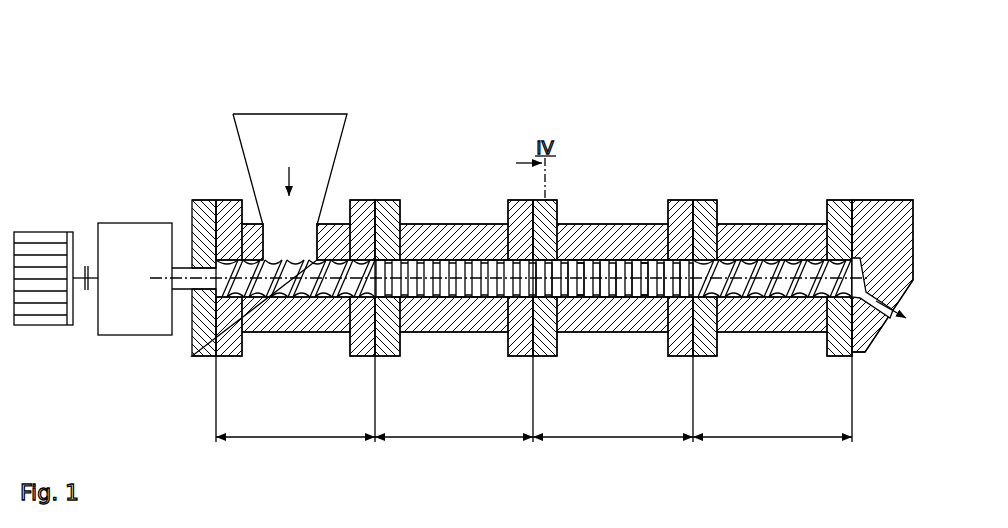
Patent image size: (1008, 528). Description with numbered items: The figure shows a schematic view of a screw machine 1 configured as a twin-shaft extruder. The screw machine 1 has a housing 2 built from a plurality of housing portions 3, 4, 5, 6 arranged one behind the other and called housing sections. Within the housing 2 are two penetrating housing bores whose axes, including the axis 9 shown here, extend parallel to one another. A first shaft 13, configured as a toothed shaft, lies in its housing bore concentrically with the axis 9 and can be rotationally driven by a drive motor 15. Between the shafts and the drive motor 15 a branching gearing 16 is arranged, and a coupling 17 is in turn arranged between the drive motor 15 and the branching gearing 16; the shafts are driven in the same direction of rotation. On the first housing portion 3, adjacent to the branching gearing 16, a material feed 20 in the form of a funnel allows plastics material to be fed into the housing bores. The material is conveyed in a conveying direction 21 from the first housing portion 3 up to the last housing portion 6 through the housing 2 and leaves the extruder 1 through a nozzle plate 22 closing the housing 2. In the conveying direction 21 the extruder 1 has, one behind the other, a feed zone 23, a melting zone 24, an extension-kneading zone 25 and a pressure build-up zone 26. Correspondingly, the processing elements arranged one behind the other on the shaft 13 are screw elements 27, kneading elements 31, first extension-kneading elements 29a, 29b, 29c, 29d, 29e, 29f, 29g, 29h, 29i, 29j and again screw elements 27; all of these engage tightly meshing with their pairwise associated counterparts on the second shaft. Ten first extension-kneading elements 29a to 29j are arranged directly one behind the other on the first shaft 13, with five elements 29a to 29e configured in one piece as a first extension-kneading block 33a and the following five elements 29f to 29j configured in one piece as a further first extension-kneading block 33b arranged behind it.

The screw machine 1 is at (611, 144).
The housing 2 is at (375, 199).
The first housing portion 3 is at (338, 222).
The housing portion 4 is at (433, 222).
The housing portion 5 is at (614, 222).
The last housing portion 6 is at (733, 222).
The axis 9 is at (270, 280).
The first shaft 13 is at (187, 272).
The drive motor 15 is at (43, 234).
The branching gearing 16 is at (118, 233).
The coupling 17 is at (83, 266).
The material feed 20 is at (250, 157).
The conveying direction 21 is at (444, 116).
The nozzle plate 22 is at (887, 322).
The feed zone 23 is at (295, 427).
The melting zone 24 is at (454, 427).
The extension-kneading zone 25 is at (613, 427).
The pressure build-up zone 26 is at (772, 427).
The screw element 27 is at (354, 300).
The first extension-kneading element 29a is at (542, 300).
The first extension-kneading element 29b is at (556, 300).
The first extension-kneading element 29c is at (573, 300).
The first extension-kneading element 29d is at (589, 300).
The first extension-kneading element 29e is at (603, 300).
The first extension-kneading element 29f is at (621, 300).
The first extension-kneading element 29g is at (637, 300).
The first extension-kneading element 29h is at (653, 300).
The first extension-kneading element 29i is at (668, 300).
The first extension-kneading element 29j is at (686, 300).
The kneading element 31 is at (433, 300).
The first extension-kneading block 33a is at (583, 259).
The first extension-kneading block 33b is at (648, 259).